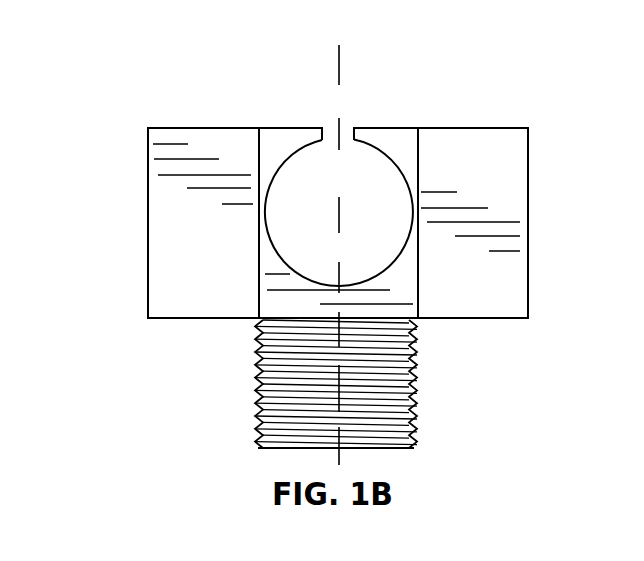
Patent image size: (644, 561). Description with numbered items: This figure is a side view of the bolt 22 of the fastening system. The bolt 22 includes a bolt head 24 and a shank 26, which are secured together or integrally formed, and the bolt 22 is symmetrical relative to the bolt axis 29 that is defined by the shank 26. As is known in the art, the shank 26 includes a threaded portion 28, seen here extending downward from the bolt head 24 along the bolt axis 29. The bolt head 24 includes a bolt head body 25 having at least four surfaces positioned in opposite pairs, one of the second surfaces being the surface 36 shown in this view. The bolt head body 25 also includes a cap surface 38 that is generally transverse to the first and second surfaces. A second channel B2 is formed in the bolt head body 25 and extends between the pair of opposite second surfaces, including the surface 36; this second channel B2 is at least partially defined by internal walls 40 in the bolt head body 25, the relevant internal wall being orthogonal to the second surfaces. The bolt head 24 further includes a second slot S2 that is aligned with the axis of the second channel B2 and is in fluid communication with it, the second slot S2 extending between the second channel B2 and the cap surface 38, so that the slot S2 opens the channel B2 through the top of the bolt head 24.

The bolt 22 is at (342, 257).
The bolt head 24 is at (541, 231).
The bolt head body 25 is at (150, 280).
The shank 26 is at (332, 385).
The threaded portion 28 is at (258, 423).
The bolt axis 29 is at (337, 381).
The second surface 36 is at (398, 135).
The cap surface 38 is at (272, 128).
The internal walls 40 is at (282, 242).
The second slot S2 is at (345, 133).
The second channel B2 is at (393, 229).